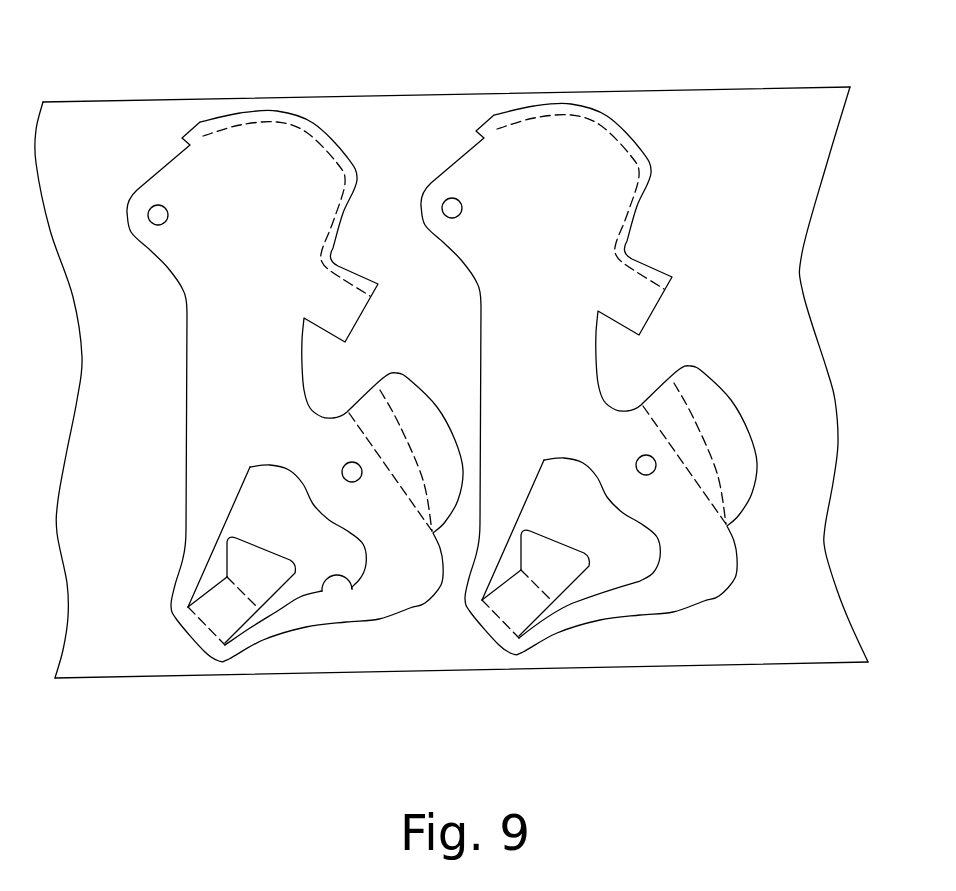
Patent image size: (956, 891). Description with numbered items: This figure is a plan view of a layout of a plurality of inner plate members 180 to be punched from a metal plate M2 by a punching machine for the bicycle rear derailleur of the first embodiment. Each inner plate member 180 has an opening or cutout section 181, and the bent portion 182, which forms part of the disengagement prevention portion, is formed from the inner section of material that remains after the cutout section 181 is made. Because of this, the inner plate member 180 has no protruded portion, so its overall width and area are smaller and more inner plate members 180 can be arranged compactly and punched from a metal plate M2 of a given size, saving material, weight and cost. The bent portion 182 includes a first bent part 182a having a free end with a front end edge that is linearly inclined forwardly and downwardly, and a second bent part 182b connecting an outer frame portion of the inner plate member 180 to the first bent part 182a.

The metal plate M2 is at (130, 135).
The inner plate member 180 is at (208, 385).
The opening or cutout section 181 is at (348, 560).
The bent portion 182 is at (224, 618).
The first bent part 182a is at (248, 540).
The second bent part 182b is at (222, 598).